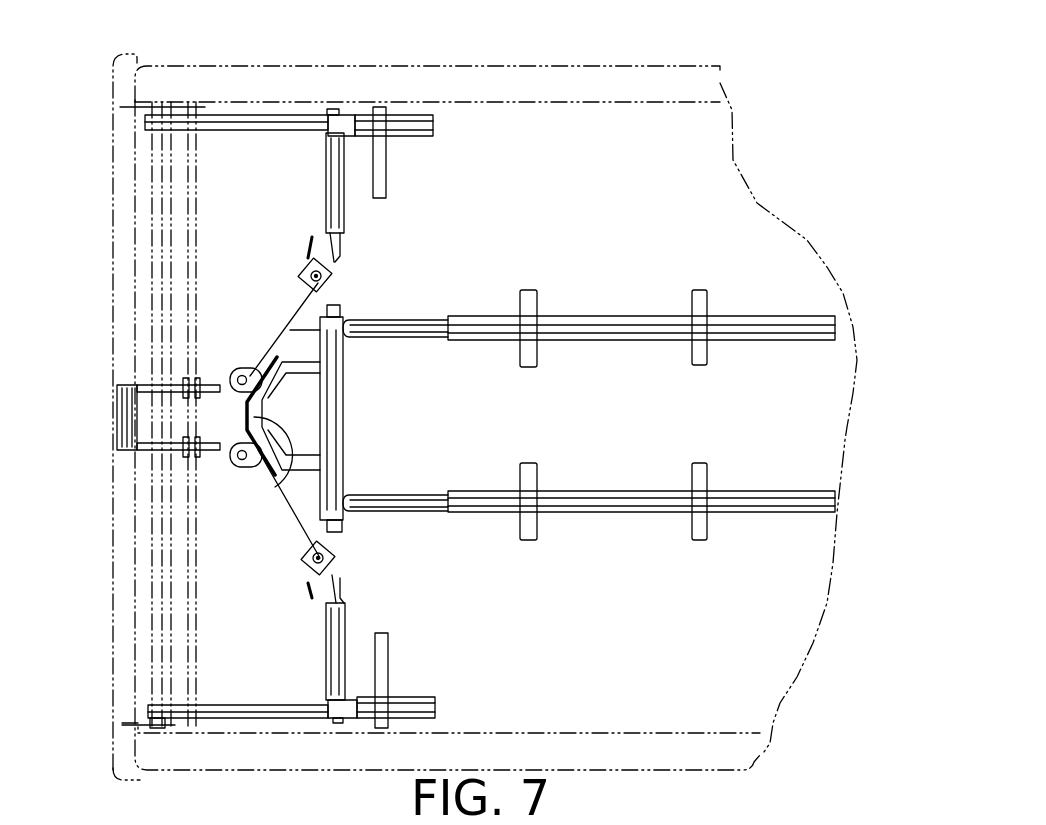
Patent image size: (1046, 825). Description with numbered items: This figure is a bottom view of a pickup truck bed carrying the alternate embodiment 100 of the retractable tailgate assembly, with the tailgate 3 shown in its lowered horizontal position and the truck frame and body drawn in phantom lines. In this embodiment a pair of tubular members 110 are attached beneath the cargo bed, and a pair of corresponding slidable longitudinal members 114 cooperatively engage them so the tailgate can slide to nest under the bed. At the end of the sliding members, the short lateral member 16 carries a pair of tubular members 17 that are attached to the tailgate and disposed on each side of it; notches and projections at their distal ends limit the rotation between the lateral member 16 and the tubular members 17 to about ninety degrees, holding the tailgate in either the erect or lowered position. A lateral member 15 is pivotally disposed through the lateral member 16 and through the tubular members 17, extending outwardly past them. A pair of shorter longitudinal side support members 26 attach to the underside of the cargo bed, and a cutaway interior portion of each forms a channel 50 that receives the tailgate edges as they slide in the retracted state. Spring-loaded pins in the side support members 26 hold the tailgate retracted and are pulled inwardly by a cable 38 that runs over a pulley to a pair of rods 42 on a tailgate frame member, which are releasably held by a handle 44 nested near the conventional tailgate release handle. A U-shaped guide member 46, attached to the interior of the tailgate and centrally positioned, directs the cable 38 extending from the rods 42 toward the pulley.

The alternate embodiment 100 is at (100, 142).
The tailgate 3 is at (124, 690).
The lateral member 15 is at (343, 528).
The lateral member 16 is at (345, 410).
The tubular members 17 is at (290, 326).
The longitudinal side support members 26 is at (412, 700).
The cable 38 is at (310, 298).
The rods 42 is at (173, 375).
The handle 44 is at (118, 408).
The U-shaped guide member 46 is at (292, 478).
The channel 50 is at (235, 707).
The tubular members 110 is at (595, 320).
The slidable longitudinal members 114 is at (418, 320).